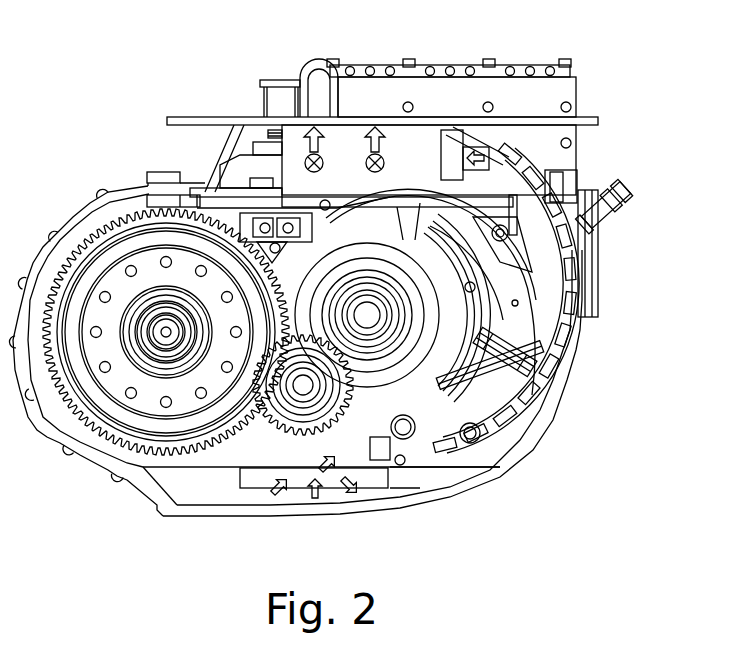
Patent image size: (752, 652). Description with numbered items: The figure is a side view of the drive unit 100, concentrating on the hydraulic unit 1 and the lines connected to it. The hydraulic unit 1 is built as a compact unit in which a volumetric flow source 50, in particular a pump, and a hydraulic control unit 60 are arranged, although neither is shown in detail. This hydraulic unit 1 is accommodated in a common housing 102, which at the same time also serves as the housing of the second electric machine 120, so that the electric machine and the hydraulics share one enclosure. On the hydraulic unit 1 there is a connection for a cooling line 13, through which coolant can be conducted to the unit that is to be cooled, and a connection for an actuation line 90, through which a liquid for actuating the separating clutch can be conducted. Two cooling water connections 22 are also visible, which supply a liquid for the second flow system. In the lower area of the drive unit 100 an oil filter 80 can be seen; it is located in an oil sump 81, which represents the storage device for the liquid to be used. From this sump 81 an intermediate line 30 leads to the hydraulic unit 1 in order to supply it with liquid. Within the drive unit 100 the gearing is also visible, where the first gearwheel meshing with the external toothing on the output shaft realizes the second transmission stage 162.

The drive unit 100 is at (101, 148).
The housing 102 is at (186, 186).
The cooling line 13 is at (304, 162).
The hydraulic unit 1 is at (403, 114).
The hydraulic control unit 60 is at (418, 88).
The volumetric flow source 50 is at (290, 124).
The actuation line 90 is at (380, 157).
The cooling water connections 22 is at (621, 190).
The second electric machine 120 is at (508, 320).
The intermediate line 30 is at (556, 378).
The second transmission stage 162 is at (257, 433).
The oil filter 80 is at (373, 477).
The oil sump 81 is at (430, 490).